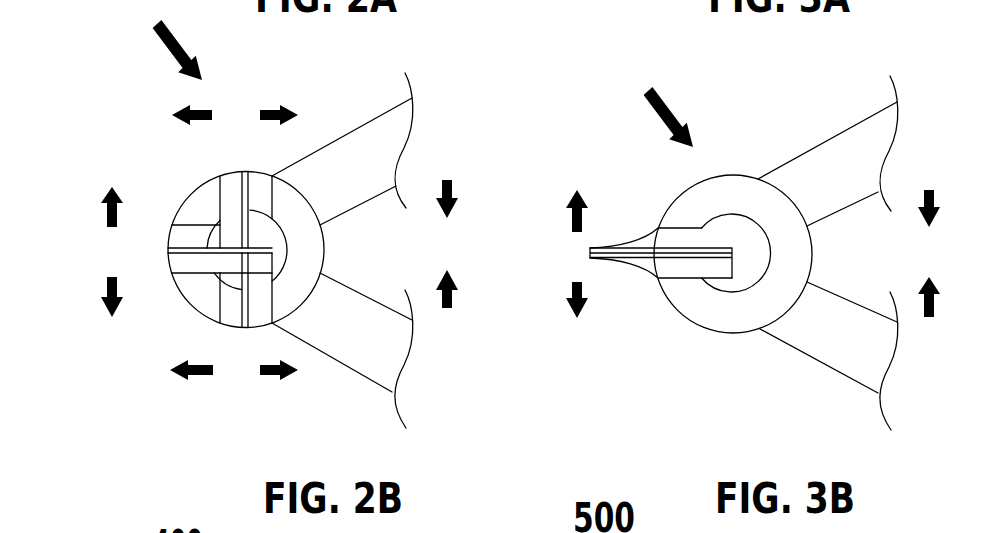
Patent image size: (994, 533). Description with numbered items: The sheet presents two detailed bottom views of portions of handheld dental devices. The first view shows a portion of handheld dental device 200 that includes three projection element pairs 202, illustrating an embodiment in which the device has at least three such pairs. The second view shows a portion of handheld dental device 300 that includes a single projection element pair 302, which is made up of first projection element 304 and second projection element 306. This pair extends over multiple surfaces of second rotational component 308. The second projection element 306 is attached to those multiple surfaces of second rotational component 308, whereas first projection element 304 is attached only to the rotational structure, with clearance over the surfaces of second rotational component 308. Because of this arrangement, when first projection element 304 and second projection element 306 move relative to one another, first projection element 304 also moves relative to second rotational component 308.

In FIG. 2B, the handheld dental device 200 is at (147, 40).
In FIG. 2B, the projection element pairs 202 is at (247, 166).
In FIG. 3B, the handheld dental device 300 is at (640, 99).
In FIG. 3B, the projection element pair 302 is at (583, 262).
In FIG. 3B, the first projection element 304 is at (642, 268).
In FIG. 3B, the second projection element 306 is at (640, 255).
In FIG. 3B, the second rotational component 308 is at (705, 312).